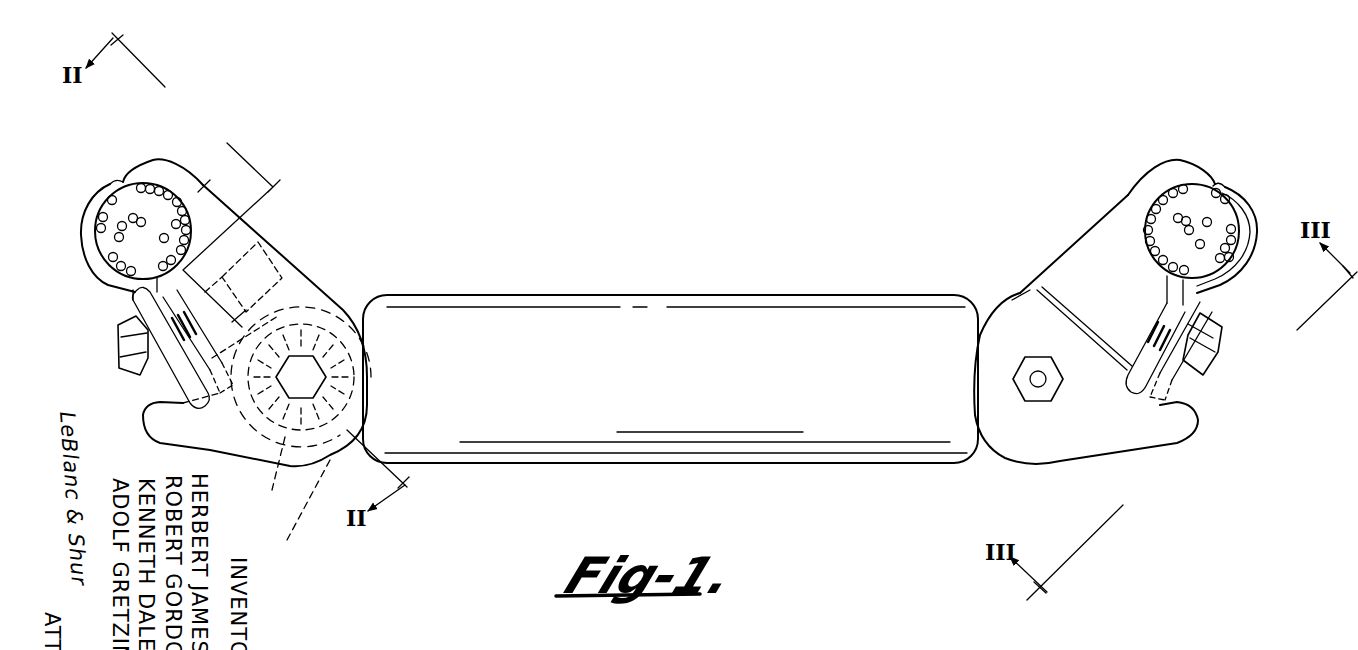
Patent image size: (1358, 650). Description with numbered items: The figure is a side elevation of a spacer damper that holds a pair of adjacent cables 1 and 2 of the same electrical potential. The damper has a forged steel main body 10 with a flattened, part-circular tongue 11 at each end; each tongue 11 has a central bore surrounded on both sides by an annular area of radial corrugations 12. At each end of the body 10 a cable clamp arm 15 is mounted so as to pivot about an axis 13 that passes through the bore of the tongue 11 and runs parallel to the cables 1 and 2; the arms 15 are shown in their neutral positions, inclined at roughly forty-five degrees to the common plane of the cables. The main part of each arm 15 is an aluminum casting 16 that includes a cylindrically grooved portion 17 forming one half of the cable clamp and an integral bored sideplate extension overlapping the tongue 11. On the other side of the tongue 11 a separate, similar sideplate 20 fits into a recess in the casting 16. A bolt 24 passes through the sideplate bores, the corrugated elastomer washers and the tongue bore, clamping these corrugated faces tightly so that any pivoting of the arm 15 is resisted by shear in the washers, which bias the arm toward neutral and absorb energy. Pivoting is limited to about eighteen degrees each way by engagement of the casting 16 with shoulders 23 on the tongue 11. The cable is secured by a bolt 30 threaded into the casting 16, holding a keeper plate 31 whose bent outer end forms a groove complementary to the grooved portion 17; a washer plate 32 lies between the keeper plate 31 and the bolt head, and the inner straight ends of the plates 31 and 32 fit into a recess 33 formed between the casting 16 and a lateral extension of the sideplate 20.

The cable 1 is at (120, 236).
The cable 2 is at (1188, 197).
The main body 10 is at (820, 260).
The flattened tongue 11 is at (302, 511).
The radial corrugations 12 is at (269, 477).
The pivotal axis 13 is at (304, 367).
The cable clamp arm 15 is at (287, 253).
The casting 16 is at (1003, 298).
The cylindrically grooved portion 17 is at (1122, 207).
The sideplate 20 is at (1022, 304).
The shoulders 23 is at (333, 297).
The bolt 24 is at (1043, 398).
The bolt 30 is at (126, 352).
The keeper plate 31 is at (110, 187).
The washer plate 32 is at (168, 385).
The recess 33 is at (1157, 403).